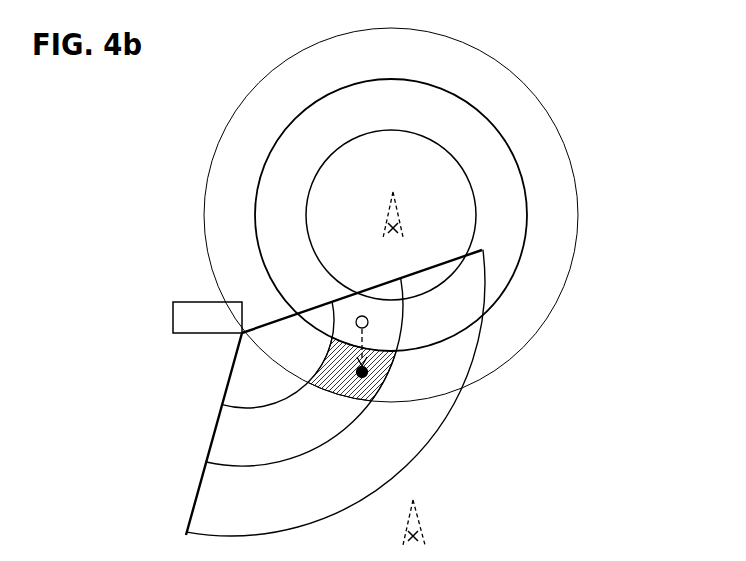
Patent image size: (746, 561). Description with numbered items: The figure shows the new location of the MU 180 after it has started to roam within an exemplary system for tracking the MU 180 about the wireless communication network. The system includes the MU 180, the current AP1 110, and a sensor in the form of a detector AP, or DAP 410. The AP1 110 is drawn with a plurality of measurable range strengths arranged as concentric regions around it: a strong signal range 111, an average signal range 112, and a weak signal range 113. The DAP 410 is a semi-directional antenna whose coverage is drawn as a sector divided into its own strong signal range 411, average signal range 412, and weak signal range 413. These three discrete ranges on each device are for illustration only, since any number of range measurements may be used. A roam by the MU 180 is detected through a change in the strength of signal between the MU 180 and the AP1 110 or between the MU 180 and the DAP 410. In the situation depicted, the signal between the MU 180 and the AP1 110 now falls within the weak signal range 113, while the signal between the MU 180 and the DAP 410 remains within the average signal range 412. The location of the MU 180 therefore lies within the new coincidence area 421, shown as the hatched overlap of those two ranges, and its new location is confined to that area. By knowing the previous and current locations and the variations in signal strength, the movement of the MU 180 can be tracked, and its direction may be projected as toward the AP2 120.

The current AP1 110 is at (432, 212).
The strong signal range 111 is at (465, 173).
The average signal range 112 is at (487, 117).
The weak signal range 113 is at (487, 52).
The AP2 120 is at (418, 506).
The MU 180 is at (366, 378).
The detector AP (DAP) 410 is at (188, 302).
The strong signal range 411 is at (225, 403).
The average signal range 412 is at (207, 462).
The weak signal range 413 is at (185, 537).
The new coincidence area 421 is at (390, 372).